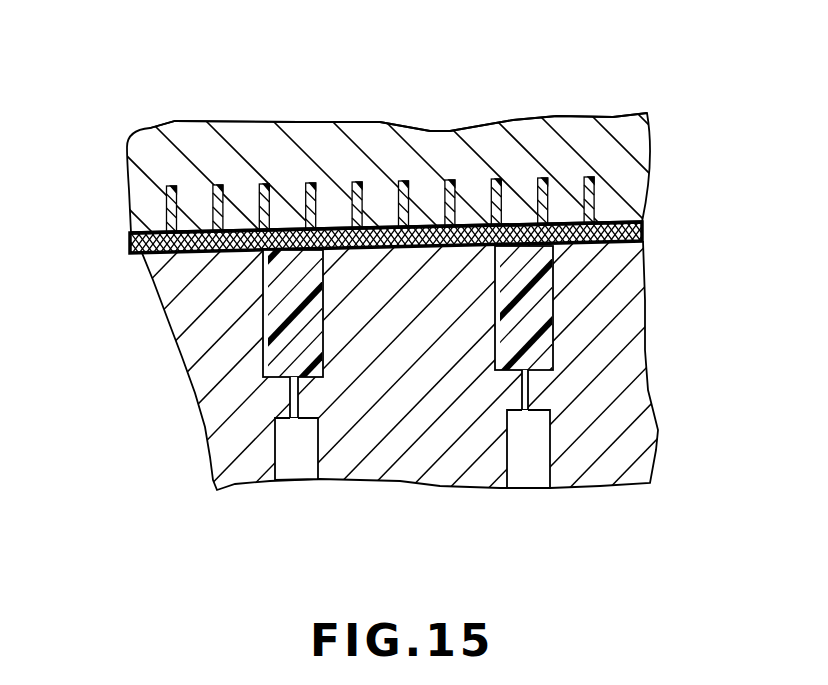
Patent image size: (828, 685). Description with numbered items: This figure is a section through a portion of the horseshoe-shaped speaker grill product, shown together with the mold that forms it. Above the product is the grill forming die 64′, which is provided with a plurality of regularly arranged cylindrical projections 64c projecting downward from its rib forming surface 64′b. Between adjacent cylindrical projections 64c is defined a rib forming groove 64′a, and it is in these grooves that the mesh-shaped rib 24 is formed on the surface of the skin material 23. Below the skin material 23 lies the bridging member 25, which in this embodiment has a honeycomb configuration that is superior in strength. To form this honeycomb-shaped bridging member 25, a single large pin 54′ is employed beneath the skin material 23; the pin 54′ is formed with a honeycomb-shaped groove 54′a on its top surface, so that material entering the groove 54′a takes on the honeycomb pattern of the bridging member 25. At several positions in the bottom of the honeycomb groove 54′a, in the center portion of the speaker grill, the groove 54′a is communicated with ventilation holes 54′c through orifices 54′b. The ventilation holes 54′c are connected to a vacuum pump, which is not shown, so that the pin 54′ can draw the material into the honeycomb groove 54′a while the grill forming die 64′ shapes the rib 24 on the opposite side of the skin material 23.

The grill forming die 64′ is at (160, 150).
The rib forming groove 64′a is at (262, 187).
The cylindrical projections 64c is at (287, 207).
The rib 24 is at (356, 186).
The skin material 23 is at (642, 230).
The rib forming surface 64′b is at (183, 252).
The pin 54′ is at (215, 362).
The honeycomb-shaped groove 54′a is at (280, 312).
The bridging member 25 is at (543, 313).
The orifices 54′b is at (292, 400).
The ventilation holes 54′c is at (533, 462).